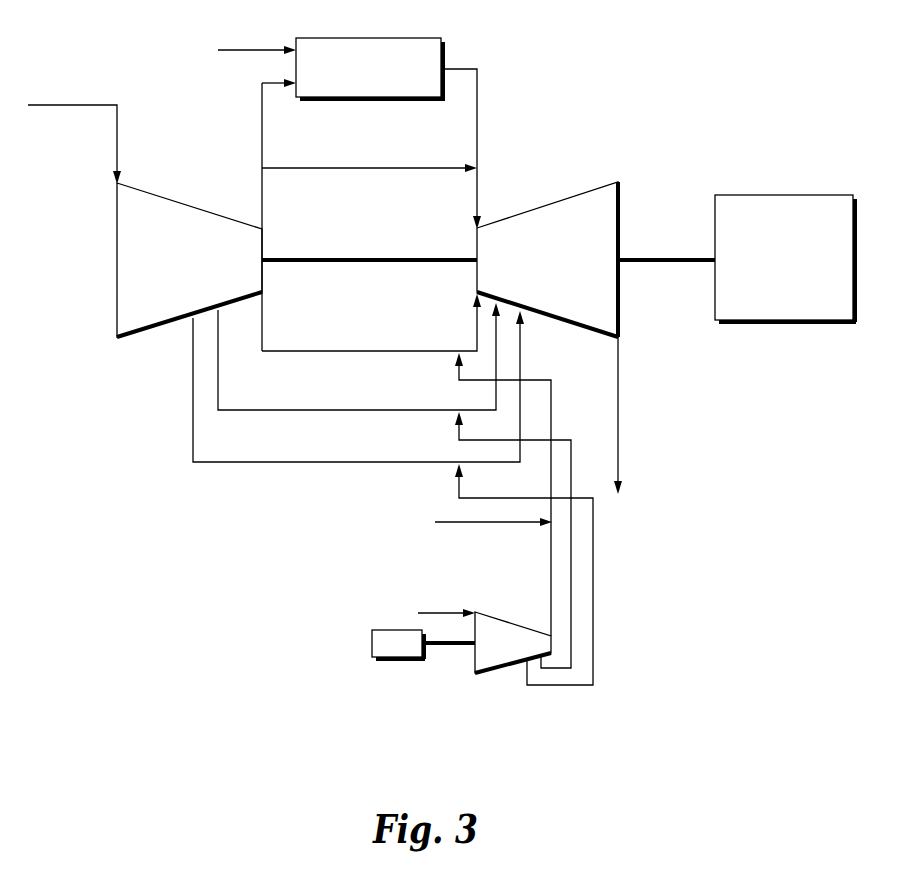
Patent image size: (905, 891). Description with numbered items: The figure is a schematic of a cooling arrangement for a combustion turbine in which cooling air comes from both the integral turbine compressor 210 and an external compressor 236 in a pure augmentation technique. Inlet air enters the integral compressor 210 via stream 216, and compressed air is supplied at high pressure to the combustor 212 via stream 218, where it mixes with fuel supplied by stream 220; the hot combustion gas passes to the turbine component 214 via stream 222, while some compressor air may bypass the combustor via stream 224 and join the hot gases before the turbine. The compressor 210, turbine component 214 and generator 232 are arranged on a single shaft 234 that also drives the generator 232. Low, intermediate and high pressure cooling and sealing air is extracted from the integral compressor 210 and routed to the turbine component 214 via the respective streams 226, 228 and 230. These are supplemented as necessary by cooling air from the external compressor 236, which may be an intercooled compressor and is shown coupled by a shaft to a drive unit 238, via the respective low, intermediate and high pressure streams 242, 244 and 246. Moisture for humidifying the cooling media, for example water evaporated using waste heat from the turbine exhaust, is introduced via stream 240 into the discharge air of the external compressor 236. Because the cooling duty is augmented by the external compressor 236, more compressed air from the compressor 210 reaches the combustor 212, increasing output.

The integral turbine compressor 210 is at (160, 208).
The combustor 212 is at (390, 38).
The turbine 214 is at (555, 218).
The inlet air 216 is at (118, 128).
The compressed air line to combustor 218 is at (263, 205).
The fuel supply 220 is at (258, 50).
The combustion gas line to turbine 222 is at (480, 130).
The bypass air line 224 is at (324, 168).
The low pressure cooling air stream 226 is at (325, 462).
The intermediate pressure cooling air stream 228 is at (303, 410).
The high pressure cooling air stream 230 is at (318, 351).
The generator 232 is at (780, 203).
The shaft 234 is at (670, 258).
The external compressor 236 is at (503, 672).
The motor 238 is at (388, 634).
The moisture introduction stream 240 is at (456, 522).
The low pressure cooling air stream from external compressor 242 is at (596, 614).
The intermediate pressure cooling air stream from external compressor 244 is at (573, 634).
The high pressure cooling air stream from external compressor 246 is at (550, 573).